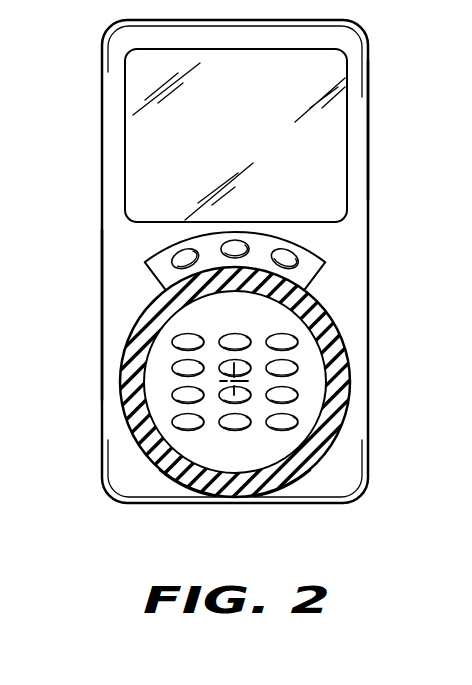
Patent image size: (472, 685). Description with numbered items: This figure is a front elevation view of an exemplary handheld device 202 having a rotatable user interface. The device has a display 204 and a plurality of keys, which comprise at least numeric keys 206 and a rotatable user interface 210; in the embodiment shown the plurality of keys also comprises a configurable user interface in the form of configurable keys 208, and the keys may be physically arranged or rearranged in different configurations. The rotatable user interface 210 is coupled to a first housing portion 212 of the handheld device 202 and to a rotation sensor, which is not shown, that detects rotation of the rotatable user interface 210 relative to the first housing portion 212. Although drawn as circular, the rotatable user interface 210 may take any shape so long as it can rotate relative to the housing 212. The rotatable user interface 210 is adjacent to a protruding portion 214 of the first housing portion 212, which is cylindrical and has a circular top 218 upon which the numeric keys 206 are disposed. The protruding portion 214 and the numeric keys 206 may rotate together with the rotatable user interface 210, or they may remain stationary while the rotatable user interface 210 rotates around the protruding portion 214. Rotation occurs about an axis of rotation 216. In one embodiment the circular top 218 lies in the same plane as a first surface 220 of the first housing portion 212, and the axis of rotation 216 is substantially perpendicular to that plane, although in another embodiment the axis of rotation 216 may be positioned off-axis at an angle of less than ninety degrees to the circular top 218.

The handheld device 202 is at (436, 33).
The display 204 is at (124, 151).
The numeric keys 206 is at (180, 393).
The configurable keys 208 is at (325, 268).
The rotatable user interface 210 is at (328, 420).
The first housing portion 212 is at (369, 125).
The protruding portion 214 is at (195, 450).
The axis of rotation 216 is at (234, 365).
The circular top 218 is at (267, 450).
The first surface 220 is at (124, 310).